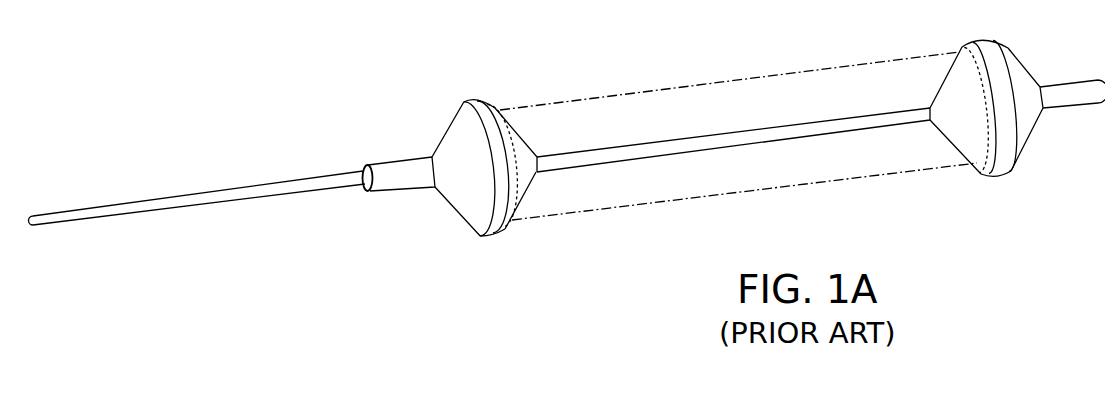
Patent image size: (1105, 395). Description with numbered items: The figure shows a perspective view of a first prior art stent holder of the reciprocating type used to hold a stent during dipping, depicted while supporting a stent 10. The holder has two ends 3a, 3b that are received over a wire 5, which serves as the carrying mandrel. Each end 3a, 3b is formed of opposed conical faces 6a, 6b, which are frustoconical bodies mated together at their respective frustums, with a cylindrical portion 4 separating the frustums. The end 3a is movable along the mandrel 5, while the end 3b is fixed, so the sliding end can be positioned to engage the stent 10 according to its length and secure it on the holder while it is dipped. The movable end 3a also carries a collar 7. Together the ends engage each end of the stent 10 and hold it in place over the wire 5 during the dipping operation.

The end 3a is at (472, 93).
The end 3b is at (1000, 181).
The cylindrical portion 4 is at (508, 221).
The wire 5 is at (275, 198).
The conical face 6a is at (530, 190).
The conical face 6b is at (453, 193).
The collar 7 is at (368, 165).
The stent 10 is at (632, 217).